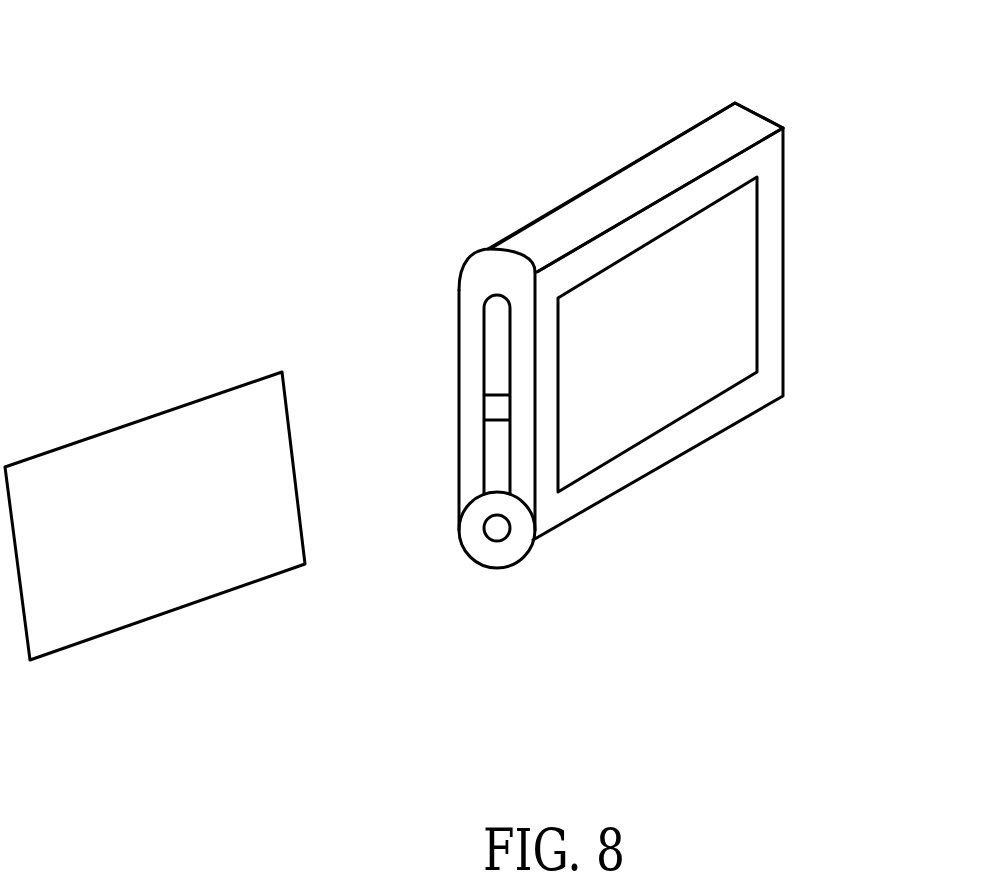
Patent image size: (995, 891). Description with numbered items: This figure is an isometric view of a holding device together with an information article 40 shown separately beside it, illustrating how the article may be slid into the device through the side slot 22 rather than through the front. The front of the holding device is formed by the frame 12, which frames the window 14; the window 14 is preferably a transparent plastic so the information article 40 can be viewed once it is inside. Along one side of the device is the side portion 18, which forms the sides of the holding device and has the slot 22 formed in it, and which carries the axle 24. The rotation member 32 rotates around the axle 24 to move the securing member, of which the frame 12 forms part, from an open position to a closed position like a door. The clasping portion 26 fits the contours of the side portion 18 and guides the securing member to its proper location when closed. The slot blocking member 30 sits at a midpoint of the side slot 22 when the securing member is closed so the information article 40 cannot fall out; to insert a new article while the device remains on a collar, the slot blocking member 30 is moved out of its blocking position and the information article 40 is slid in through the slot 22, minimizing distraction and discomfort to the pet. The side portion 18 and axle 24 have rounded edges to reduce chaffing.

The frame 12 is at (765, 318).
The window 14 is at (705, 337).
The side portion 18 is at (475, 293).
The slot 22 is at (493, 333).
The axle 24 is at (497, 530).
The clasping portion 26 is at (588, 197).
The slot blocking member 30 is at (490, 407).
The rotation member 32 is at (465, 543).
The information article 40 is at (108, 300).